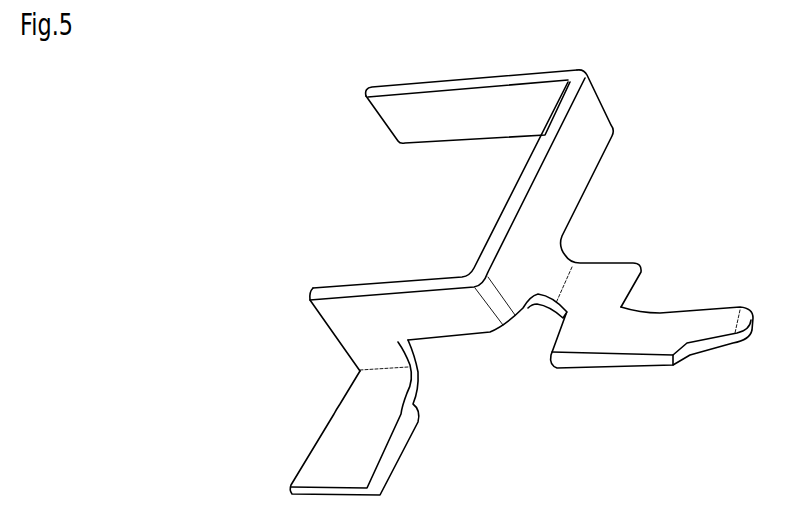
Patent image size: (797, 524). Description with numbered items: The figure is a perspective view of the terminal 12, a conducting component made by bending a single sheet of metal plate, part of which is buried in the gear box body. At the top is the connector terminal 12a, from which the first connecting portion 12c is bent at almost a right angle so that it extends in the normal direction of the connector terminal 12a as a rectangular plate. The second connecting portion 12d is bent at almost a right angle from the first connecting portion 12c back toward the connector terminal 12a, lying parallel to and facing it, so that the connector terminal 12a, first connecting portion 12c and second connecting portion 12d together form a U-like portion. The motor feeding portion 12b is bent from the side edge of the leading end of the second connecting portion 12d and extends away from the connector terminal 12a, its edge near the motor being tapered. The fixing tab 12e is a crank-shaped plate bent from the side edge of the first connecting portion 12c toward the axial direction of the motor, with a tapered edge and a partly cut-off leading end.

The terminal 12 is at (245, 107).
The connector terminal 12a is at (438, 80).
The motor feeding portion 12b is at (323, 462).
The first connecting portion 12c is at (580, 175).
The second connecting portion 12d is at (455, 332).
The fixing tab 12e is at (658, 318).